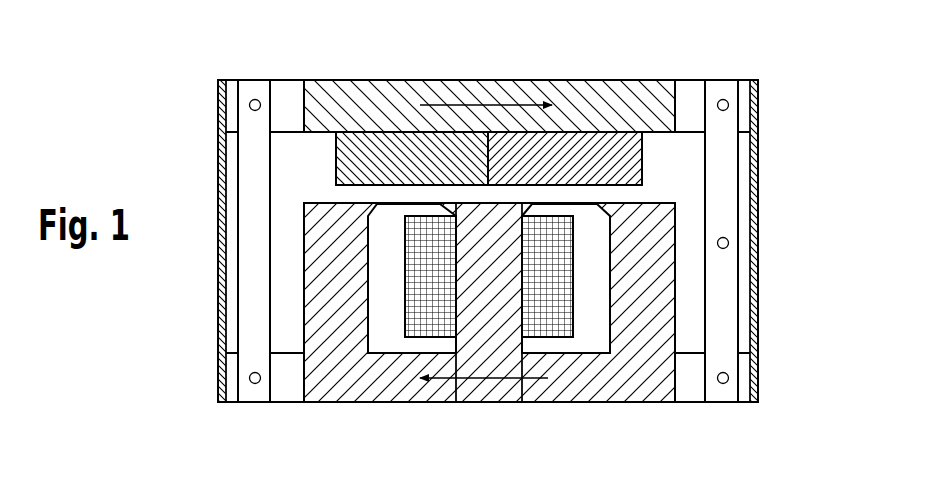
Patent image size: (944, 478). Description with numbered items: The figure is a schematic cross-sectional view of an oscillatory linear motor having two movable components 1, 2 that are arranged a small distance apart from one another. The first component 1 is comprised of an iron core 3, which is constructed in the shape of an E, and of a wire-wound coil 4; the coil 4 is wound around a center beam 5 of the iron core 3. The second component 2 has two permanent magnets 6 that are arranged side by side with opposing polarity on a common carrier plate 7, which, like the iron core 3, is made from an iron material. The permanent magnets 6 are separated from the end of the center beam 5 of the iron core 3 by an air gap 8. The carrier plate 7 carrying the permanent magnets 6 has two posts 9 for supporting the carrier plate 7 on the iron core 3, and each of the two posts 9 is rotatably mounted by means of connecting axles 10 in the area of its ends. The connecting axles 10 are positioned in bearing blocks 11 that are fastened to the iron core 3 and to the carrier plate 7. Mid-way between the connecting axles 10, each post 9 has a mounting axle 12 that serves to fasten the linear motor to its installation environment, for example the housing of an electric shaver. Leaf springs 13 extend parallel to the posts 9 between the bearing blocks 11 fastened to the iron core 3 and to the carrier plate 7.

The first movable component 1 is at (368, 406).
The second movable component 2 is at (353, 70).
The iron core 3 is at (403, 382).
The wire-wound coil 4 is at (548, 322).
The center beam 5 is at (491, 303).
The permanent magnet 6 is at (454, 155).
The carrier plate 7 is at (399, 100).
The air gap 8 is at (505, 193).
The post 9 is at (725, 316).
The connecting axle 10 is at (731, 103).
The bearing block 11 is at (694, 98).
The mounting axle 12 is at (731, 243).
The leaf spring 13 is at (757, 160).